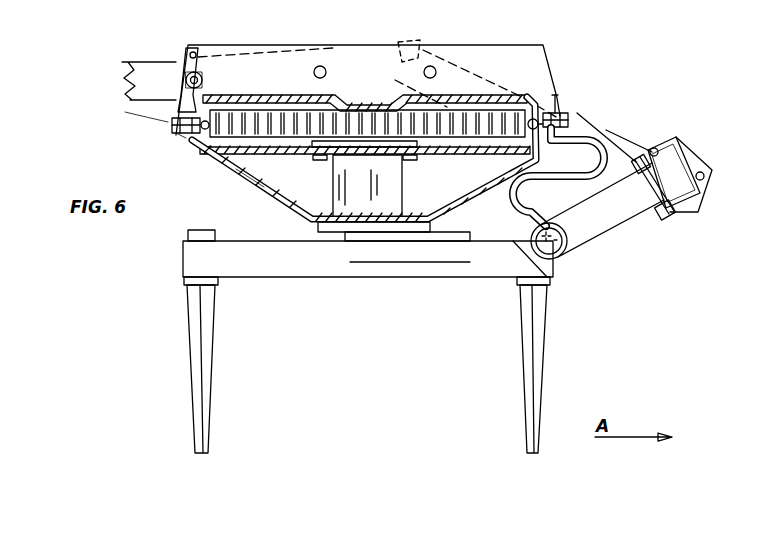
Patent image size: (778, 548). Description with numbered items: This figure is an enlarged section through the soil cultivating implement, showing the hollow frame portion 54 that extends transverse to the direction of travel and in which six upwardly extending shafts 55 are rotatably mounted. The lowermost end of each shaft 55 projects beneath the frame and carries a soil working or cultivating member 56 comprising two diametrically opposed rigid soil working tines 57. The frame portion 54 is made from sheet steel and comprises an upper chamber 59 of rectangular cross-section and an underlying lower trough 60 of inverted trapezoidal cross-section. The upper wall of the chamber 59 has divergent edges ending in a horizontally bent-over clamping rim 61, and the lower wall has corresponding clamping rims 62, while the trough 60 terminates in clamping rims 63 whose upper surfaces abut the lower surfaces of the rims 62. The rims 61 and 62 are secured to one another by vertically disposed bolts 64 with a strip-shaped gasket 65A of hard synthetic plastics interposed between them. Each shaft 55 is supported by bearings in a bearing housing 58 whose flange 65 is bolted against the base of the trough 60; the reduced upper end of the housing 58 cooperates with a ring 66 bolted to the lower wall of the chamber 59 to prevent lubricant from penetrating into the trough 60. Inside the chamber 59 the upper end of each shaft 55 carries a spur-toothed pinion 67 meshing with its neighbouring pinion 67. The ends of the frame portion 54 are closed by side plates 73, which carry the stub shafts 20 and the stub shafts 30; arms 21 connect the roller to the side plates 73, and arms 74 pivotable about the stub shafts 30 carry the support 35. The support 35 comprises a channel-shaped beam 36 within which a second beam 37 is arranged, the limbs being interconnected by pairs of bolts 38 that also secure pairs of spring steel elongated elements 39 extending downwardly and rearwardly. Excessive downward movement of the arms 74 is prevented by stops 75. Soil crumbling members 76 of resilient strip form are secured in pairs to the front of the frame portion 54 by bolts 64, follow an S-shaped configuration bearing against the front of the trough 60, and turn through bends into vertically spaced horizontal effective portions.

The stub shafts 20 is at (320, 66).
The arms 21 is at (150, 64).
The stub shafts 30 is at (424, 73).
The support 35 is at (684, 136).
The beam 36 is at (688, 155).
The second beam 37 is at (672, 222).
The bolts 38 is at (659, 231).
The elongated elements 39 is at (598, 240).
The hollow frame portion 54 is at (268, 192).
The shafts 55 is at (340, 243).
The soil working or cultivating member 56 is at (262, 280).
The soil working tines 57 is at (210, 412).
The bearing housing 58 is at (333, 177).
The upper chamber 59 is at (278, 102).
The lower trough 60 is at (284, 197).
The clamping rim 61 is at (168, 122).
The clamping rims 62 is at (168, 145).
The clamping rims 63 is at (172, 146).
The bolts 64 is at (185, 82).
The flange 65 is at (432, 232).
The gasket 65A is at (168, 130).
The ring 66 is at (378, 152).
The pinion 67 is at (449, 148).
The side plates 73 is at (549, 69).
The arms 74 is at (622, 120).
The stops 75 is at (408, 46).
The soil crumbling members 76 is at (597, 161).